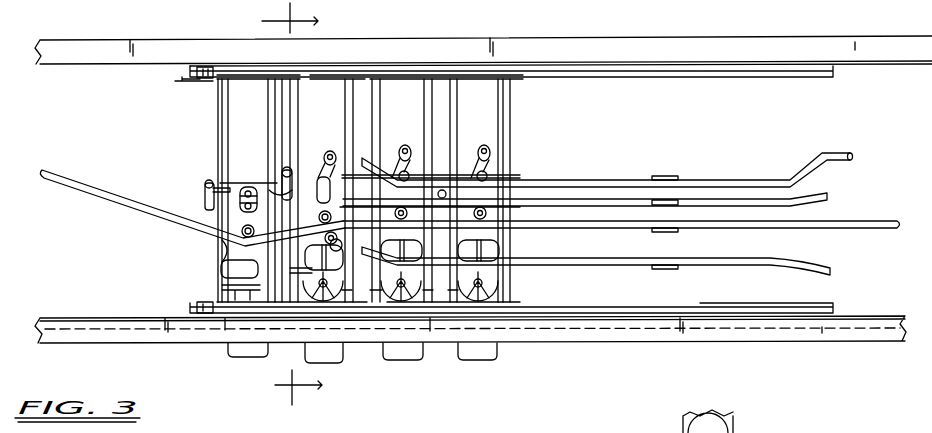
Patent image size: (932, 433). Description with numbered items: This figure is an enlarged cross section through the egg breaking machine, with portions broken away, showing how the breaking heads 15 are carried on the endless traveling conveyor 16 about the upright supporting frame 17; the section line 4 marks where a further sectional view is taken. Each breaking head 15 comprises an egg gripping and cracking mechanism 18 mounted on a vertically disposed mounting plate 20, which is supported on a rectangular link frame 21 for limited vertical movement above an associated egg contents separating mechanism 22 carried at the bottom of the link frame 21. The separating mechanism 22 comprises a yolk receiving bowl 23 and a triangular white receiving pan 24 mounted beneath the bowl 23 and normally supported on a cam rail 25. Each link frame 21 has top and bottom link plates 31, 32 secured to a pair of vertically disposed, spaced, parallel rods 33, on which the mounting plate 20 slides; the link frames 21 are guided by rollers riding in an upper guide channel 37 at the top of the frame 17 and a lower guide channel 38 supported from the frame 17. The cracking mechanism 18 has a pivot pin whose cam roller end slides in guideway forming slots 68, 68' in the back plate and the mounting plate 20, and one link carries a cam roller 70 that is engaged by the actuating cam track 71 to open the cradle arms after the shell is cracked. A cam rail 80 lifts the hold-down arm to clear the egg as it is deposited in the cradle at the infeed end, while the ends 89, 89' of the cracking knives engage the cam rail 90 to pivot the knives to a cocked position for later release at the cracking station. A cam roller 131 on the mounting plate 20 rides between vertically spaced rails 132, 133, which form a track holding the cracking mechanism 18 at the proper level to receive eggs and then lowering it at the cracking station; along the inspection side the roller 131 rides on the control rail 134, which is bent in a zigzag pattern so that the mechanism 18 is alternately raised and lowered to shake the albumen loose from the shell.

The section line 4- 4 is at (292, 205).
The breaking head 15 is at (194, 183).
The endless traveling conveyor 16 is at (182, 79).
The upright supporting frame 17 is at (652, 50).
The egg gripping and cracking mechanism 18 is at (205, 241).
The mounting plate 20 is at (235, 250).
The rectangular link frame 21 is at (218, 126).
The egg contents separating mechanism 22 is at (205, 299).
The yolk receiving bowl 23 is at (498, 290).
The white receiving pan 24 is at (462, 356).
The cam rail 25 is at (822, 333).
The top link plate 31 is at (200, 79).
The bottom link plate 32 is at (190, 306).
The vertical rods 33 is at (424, 124).
The guide channel 37 is at (595, 80).
The guide channel 38 is at (688, 310).
The guideway forming slot 68 is at (290, 201).
The guideway forming slot 68' is at (215, 204).
The cam roller 70 is at (490, 146).
The actuating cam track 71 is at (292, 206).
The cam rail 80 is at (582, 182).
The cracking knife end 89 is at (327, 260).
The cracking knife end 89' is at (239, 269).
The cam rail 90 is at (600, 266).
The cam roller 131 is at (497, 212).
The rail 132 is at (600, 208).
The rail 133 is at (562, 229).
The control rail 134 is at (97, 188).